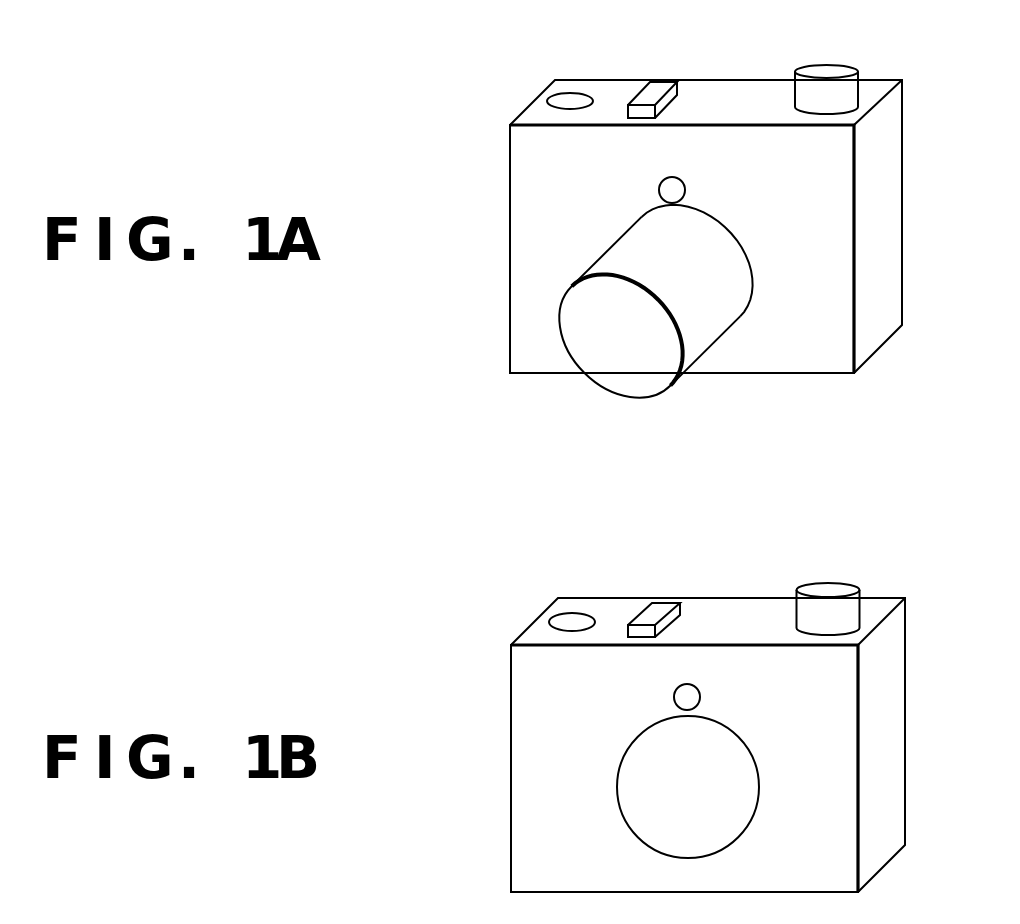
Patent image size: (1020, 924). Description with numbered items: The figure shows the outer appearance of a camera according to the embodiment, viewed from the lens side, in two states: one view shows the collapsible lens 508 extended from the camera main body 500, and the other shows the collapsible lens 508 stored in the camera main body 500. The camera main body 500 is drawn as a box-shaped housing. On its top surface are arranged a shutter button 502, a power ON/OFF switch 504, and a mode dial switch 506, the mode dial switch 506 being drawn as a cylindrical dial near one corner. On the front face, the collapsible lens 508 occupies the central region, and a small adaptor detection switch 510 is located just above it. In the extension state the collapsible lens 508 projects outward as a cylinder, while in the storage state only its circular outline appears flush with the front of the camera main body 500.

In FIG. 1A, the camera main body 500 is at (510, 310).
In FIG. 1A, the shutter button 502 is at (568, 100).
In FIG. 1A, the power ON/OFF switch 504 is at (657, 92).
In FIG. 1A, the mode dial switch 506 is at (828, 72).
In FIG. 1A, the collapsible lens 508 is at (622, 388).
In FIG. 1B, the collapsible lens 508 is at (617, 787).
In FIG. 1A, the adaptor detection switch 510 is at (667, 192).